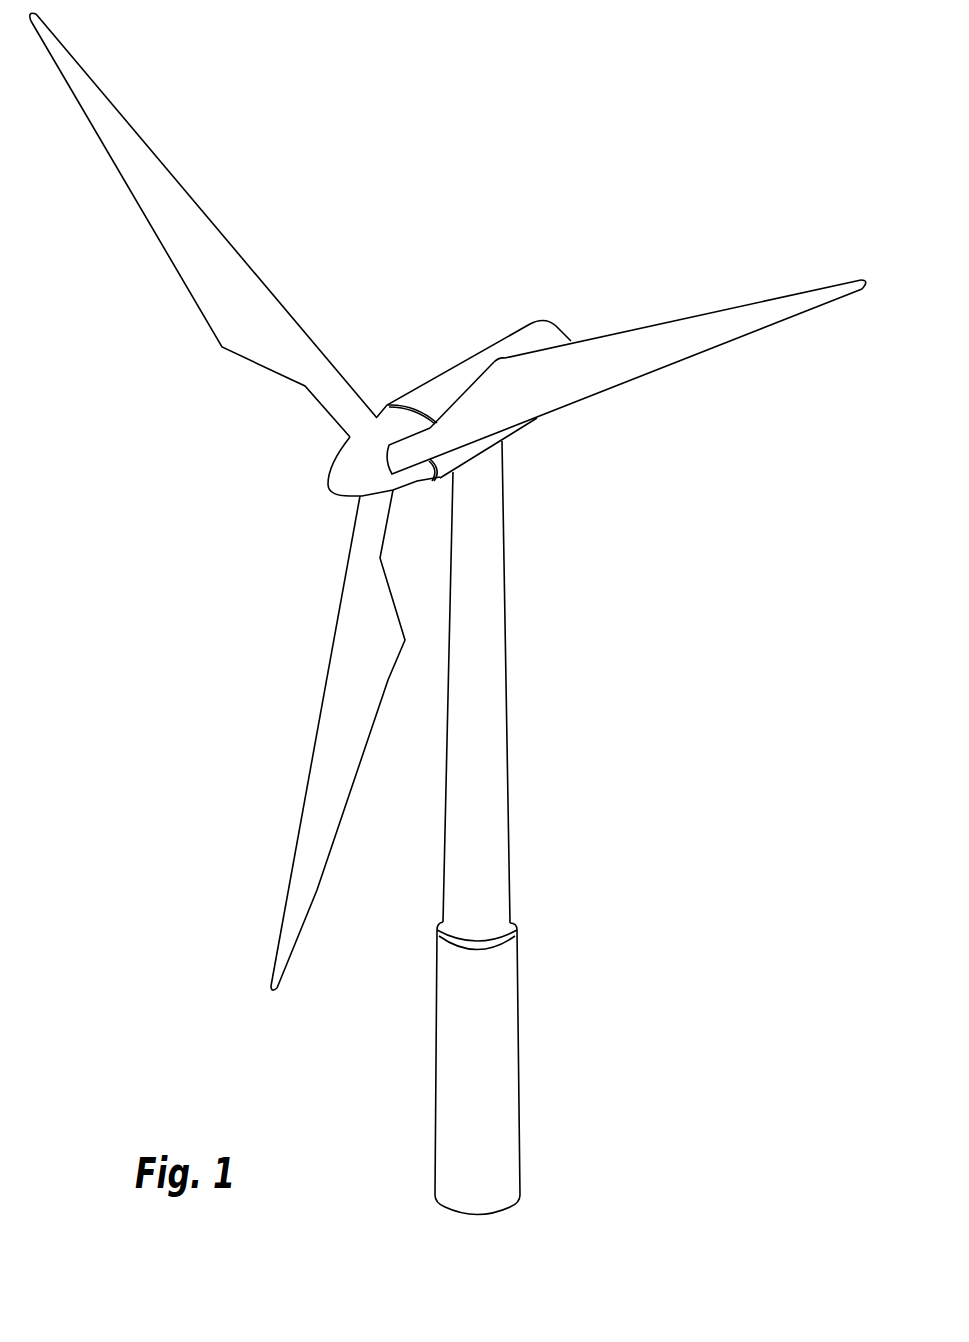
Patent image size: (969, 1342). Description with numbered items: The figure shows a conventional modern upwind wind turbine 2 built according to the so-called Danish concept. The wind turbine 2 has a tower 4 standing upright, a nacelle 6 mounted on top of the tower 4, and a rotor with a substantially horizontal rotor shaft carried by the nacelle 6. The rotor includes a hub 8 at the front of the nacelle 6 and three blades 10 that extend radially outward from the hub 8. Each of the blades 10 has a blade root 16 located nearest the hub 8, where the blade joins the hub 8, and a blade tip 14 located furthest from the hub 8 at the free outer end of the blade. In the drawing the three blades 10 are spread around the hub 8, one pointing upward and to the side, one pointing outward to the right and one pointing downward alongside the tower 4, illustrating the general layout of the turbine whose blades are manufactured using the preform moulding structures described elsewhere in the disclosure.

The wind turbine 2 is at (614, 766).
The tower 4 is at (495, 687).
The nacelle 6 is at (443, 385).
The hub 8 is at (348, 470).
The blades 10 is at (228, 325).
The blade tip 14 is at (77, 72).
The blade root 16 is at (347, 432).